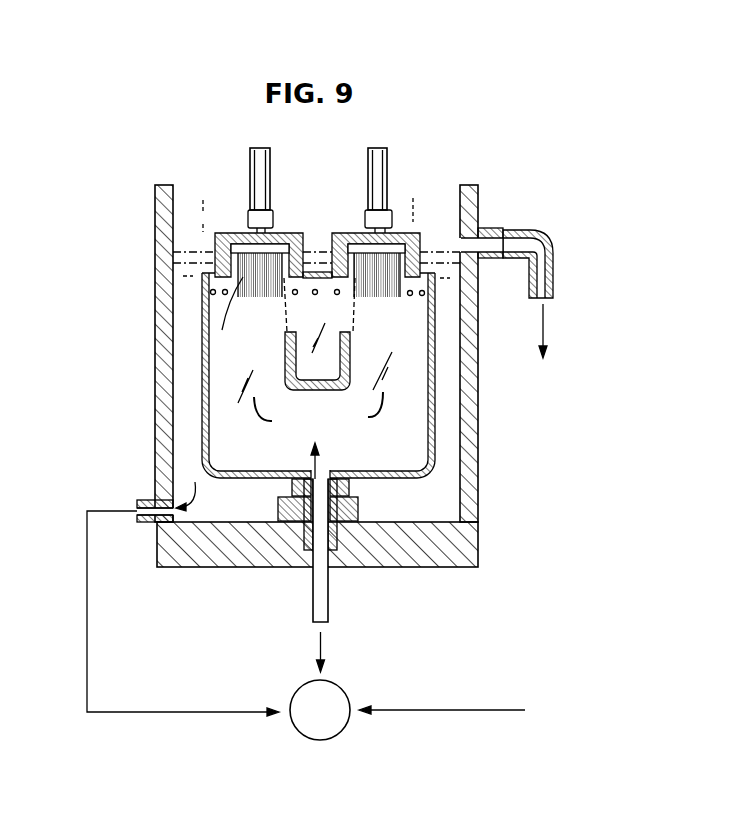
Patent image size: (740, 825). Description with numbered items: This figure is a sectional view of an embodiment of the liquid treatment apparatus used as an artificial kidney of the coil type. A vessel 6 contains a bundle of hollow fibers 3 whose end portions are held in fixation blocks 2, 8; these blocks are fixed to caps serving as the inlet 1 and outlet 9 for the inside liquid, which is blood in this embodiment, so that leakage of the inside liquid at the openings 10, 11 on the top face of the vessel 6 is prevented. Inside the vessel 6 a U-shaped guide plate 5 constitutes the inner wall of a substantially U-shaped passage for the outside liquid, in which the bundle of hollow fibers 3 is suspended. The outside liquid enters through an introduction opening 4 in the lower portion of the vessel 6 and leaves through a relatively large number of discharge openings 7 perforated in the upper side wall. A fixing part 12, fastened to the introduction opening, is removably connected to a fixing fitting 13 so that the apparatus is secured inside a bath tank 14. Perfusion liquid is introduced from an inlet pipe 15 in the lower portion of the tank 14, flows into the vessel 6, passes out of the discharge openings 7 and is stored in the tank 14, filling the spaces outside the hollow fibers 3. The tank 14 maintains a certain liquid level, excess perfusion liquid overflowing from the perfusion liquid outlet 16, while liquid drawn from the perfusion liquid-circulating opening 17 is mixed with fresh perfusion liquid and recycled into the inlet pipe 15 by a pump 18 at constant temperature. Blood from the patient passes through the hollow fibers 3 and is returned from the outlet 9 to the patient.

The inlet 1 is at (265, 212).
The fixation block 2 is at (217, 258).
The hollow fibers 3 is at (205, 444).
The introduction opening 4 is at (325, 478).
The guide plate 5 is at (297, 363).
The vessel 6 is at (437, 427).
The discharge openings 7 is at (315, 295).
The fixation block 8 is at (413, 262).
The outlet 9 is at (388, 207).
The opening 10 is at (247, 280).
The opening 11 is at (392, 284).
The fixing part 12 is at (349, 486).
The fixing fitting 13 is at (277, 503).
The bath tank 14 is at (482, 488).
The inlet pipe 15 is at (322, 596).
The perfusion liquid outlet 16 is at (512, 233).
The perfusion liquid-circulating opening 17 is at (141, 522).
The pump 18 is at (333, 738).